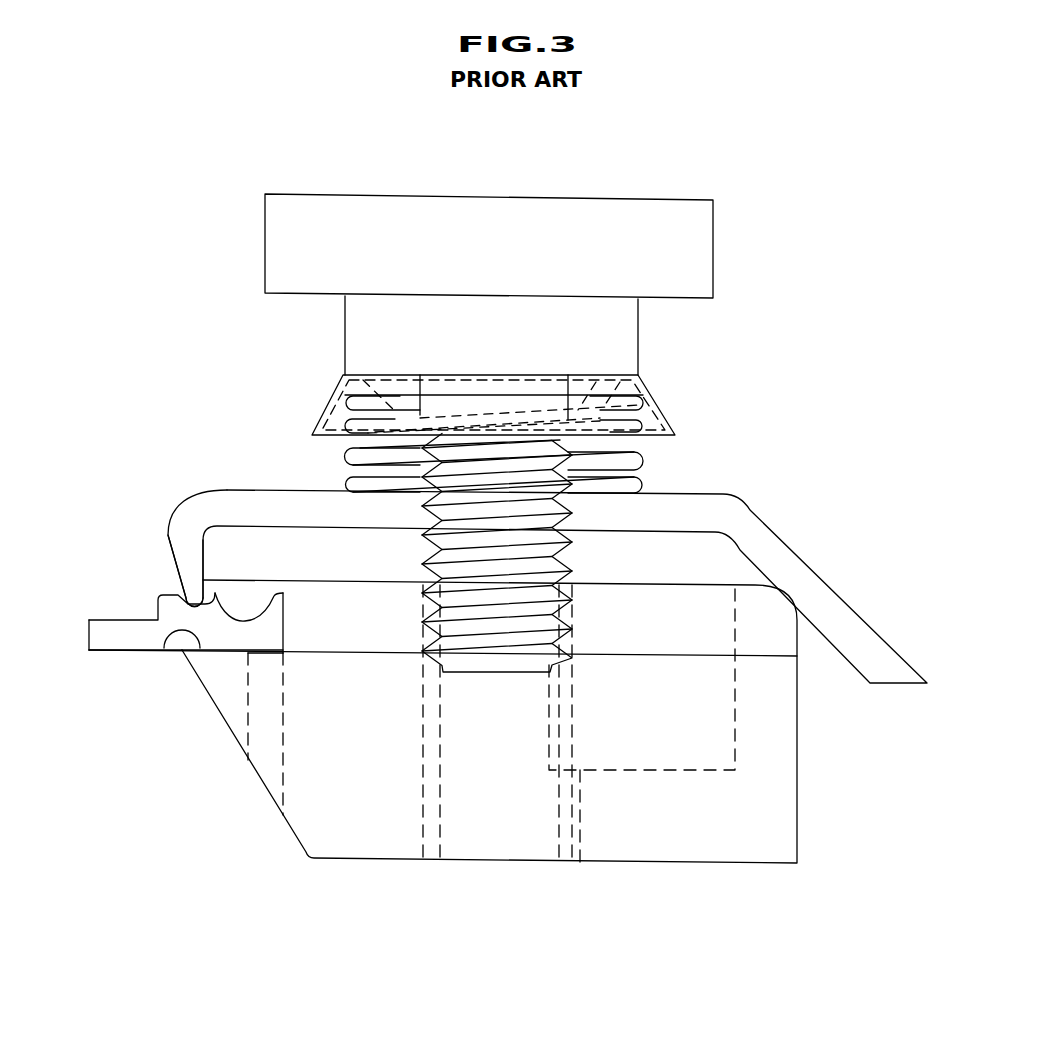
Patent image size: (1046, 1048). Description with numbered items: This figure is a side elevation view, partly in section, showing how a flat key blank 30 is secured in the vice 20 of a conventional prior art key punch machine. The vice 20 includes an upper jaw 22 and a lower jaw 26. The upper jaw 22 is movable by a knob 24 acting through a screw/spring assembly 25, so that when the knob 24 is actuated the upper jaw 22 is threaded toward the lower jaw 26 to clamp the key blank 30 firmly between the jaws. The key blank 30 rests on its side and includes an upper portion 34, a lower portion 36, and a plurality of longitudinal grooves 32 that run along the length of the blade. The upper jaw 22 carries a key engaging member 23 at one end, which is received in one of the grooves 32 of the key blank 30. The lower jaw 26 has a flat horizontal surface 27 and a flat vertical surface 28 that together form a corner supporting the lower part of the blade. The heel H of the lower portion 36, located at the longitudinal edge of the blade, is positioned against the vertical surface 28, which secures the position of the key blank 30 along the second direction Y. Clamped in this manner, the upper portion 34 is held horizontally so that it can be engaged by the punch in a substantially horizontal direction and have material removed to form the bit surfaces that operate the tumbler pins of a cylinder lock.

The vice 20 is at (275, 378).
The upper jaw 22 is at (250, 500).
The key engaging member 23 is at (182, 540).
The knob 24 is at (693, 256).
The screw/spring assembly 25 is at (697, 455).
The lower jaw 26 is at (297, 738).
The flat horizontal surface 27 is at (227, 652).
The flat vertical surface 28 is at (287, 612).
The key blank 30 is at (118, 665).
The longitudinal grooves 32 is at (222, 592).
The upper portion 34 is at (122, 627).
The lower portion 36 is at (265, 640).
The heel H is at (282, 625).
The second direction Y is at (235, 888).